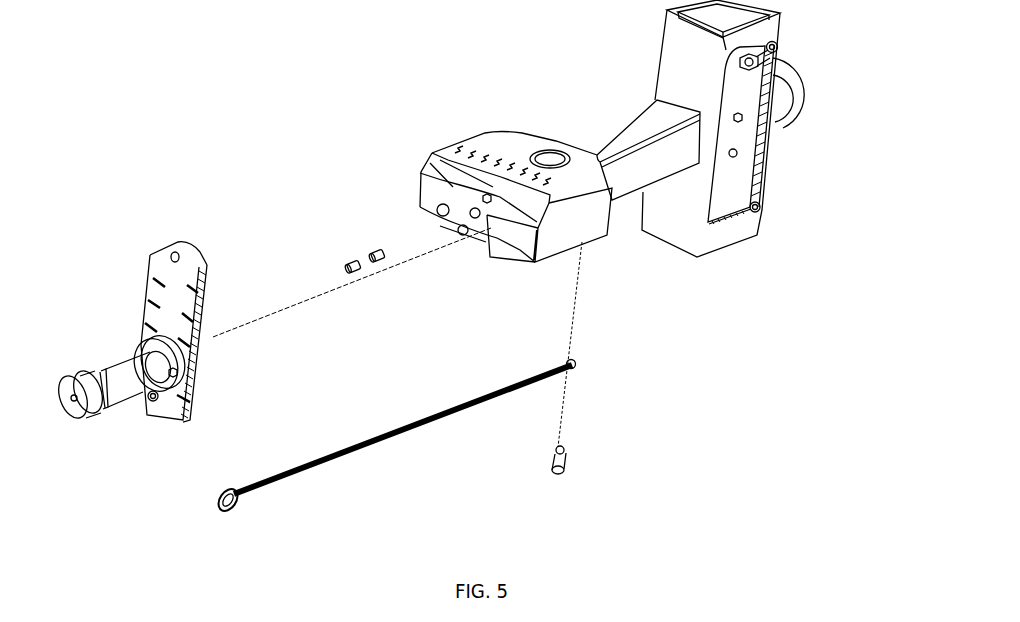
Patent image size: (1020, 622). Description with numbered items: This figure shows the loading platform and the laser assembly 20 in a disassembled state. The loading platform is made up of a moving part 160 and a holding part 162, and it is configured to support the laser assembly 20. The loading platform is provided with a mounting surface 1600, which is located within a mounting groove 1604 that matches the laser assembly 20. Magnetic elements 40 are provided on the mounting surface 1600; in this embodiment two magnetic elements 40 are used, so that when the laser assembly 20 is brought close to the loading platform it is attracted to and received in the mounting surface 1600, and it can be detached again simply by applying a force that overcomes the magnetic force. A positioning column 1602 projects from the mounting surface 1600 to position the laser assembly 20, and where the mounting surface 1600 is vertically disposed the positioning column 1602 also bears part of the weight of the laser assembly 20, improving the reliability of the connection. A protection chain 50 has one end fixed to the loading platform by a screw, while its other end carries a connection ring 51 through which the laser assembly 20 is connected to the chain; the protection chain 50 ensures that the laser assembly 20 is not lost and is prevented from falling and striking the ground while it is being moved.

The laser assembly 20 is at (152, 292).
The magnetic element 40 is at (345, 265).
The protection chain 50 is at (385, 437).
The connection ring 51 is at (224, 488).
The moving part 160 is at (668, 49).
The holding part 162 is at (650, 120).
The mounting surface 1600 is at (450, 192).
The positioning column 1602 is at (436, 220).
The mounting groove 1604 is at (428, 196).